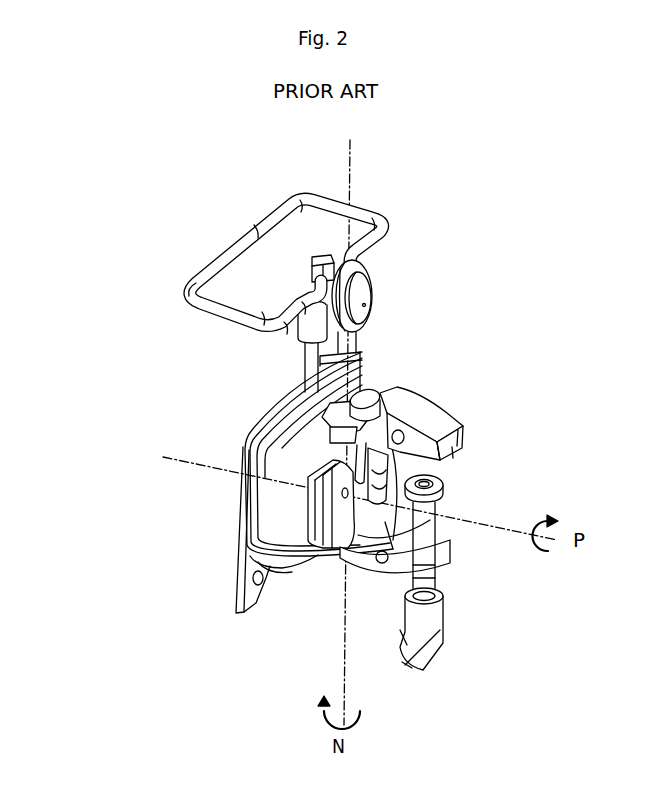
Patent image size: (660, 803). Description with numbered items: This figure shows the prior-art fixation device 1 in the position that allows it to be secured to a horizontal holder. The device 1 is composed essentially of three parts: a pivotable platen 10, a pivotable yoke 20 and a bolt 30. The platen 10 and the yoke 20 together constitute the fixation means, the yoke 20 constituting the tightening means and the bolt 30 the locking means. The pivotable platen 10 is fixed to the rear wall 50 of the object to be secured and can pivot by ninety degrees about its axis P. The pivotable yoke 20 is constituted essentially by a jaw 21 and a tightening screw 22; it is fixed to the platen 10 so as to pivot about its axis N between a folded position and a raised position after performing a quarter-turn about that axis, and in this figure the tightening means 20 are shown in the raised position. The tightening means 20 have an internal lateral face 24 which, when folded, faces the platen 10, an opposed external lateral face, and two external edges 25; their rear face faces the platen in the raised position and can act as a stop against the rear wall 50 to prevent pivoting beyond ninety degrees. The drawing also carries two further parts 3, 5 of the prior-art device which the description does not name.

The fixation device 1 is at (168, 248).
The pivotable platen 10 is at (242, 426).
The curved guide rail 5 is at (239, 454).
The base plate 3 is at (196, 530).
The bolt 30 is at (220, 533).
The rear wall 50 is at (202, 607).
The pivotable yoke 20 is at (466, 423).
The internal lateral face 24 is at (413, 408).
The external edges 25 is at (492, 397).
The jaw 21 is at (515, 424).
The tightening screw 22 is at (496, 572).